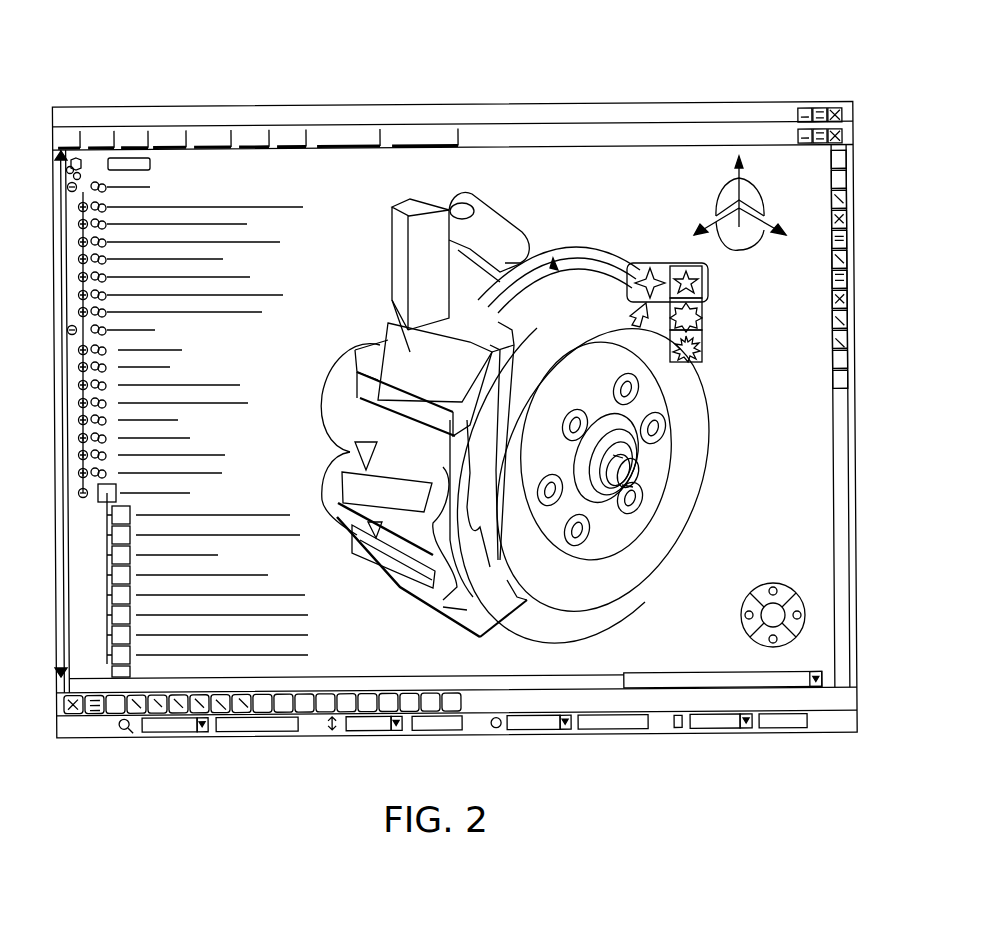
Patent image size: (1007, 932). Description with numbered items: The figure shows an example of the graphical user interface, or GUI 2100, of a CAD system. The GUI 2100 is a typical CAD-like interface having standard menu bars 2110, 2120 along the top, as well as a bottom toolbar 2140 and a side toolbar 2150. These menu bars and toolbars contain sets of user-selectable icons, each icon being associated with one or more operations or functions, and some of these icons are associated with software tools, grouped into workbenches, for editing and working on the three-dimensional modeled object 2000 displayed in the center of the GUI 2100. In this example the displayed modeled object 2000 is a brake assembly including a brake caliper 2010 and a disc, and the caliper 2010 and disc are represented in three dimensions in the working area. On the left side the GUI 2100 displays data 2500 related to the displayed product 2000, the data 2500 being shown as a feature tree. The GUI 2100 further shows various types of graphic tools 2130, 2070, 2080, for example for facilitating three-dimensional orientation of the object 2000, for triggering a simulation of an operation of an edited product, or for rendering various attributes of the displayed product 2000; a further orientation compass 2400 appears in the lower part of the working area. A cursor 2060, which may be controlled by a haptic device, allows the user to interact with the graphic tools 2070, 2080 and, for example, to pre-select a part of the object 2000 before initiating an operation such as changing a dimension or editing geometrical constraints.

The 3D modeled object 2000 is at (359, 268).
The brake caliper 2010 is at (410, 352).
The cursor 2060 is at (697, 364).
The graphic tool 2070 is at (648, 264).
The graphic tool 2080 is at (703, 325).
The GUI 2100 is at (688, 605).
The menu bar 2110 is at (550, 105).
The menu bar 2120 is at (627, 139).
The graphic tool 2130 is at (752, 237).
The bottom toolbar 2140 is at (475, 679).
The side toolbar 2150 is at (838, 402).
The navigation compass 2400 is at (767, 586).
The data 2500 is at (170, 398).